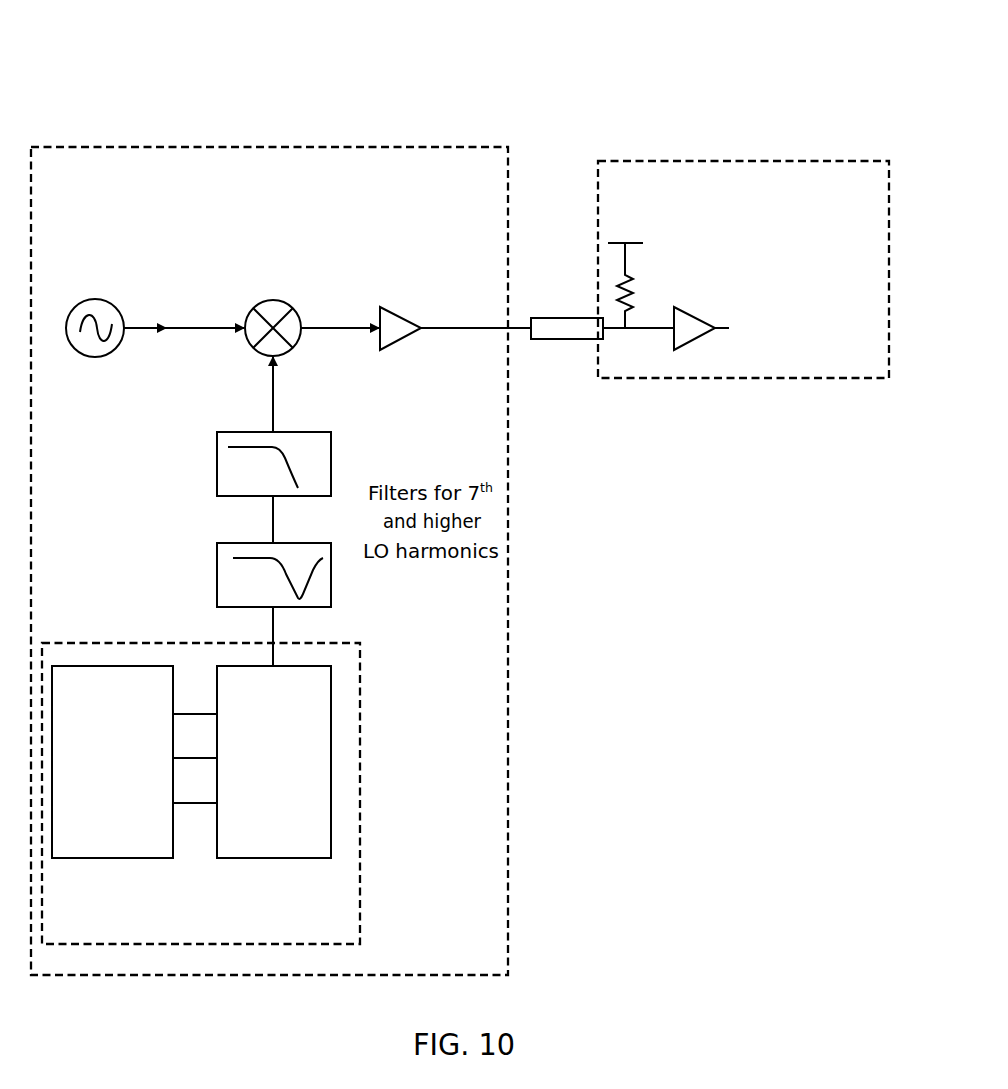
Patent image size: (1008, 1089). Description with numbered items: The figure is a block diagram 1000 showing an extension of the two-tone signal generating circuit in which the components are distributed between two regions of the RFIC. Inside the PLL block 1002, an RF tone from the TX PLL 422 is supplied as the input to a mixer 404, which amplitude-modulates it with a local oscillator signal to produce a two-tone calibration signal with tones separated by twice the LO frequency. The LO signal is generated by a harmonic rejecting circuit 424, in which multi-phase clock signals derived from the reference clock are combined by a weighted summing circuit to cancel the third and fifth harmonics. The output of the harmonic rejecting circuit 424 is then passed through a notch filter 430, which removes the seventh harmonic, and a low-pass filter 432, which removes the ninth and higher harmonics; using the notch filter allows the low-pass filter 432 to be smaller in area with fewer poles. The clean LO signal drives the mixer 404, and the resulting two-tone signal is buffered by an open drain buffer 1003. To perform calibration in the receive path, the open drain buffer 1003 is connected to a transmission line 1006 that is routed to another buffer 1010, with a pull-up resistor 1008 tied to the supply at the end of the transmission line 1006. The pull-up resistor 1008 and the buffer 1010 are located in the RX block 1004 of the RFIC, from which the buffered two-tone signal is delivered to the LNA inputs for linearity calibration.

The block diagram 1000 is at (736, 72).
The PLL block 1002 is at (410, 147).
The RX block 1004 is at (825, 161).
The TX PLL 422 is at (95, 357).
The mixer 404 is at (279, 301).
The open drain buffer 1003 is at (395, 343).
The transmission line 1006 is at (583, 340).
The pull-up resistor 1008 is at (636, 292).
The buffer 1010 is at (701, 318).
The low-pass filter 432 is at (304, 432).
The notch filter 430 is at (304, 543).
The harmonic rejecting circuit 424 is at (321, 643).